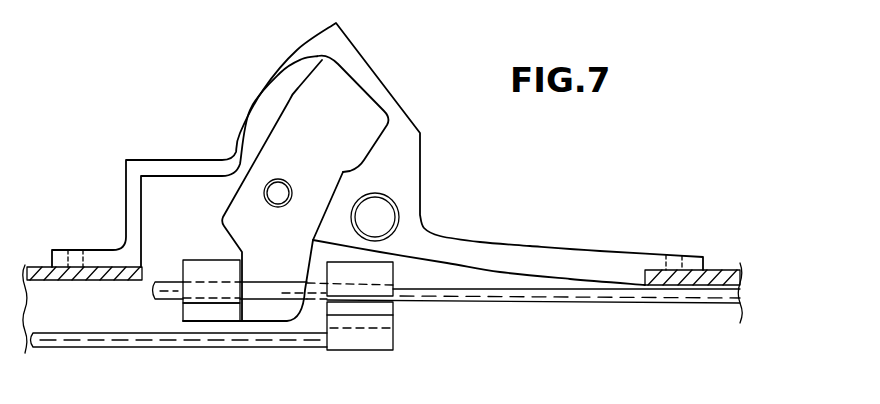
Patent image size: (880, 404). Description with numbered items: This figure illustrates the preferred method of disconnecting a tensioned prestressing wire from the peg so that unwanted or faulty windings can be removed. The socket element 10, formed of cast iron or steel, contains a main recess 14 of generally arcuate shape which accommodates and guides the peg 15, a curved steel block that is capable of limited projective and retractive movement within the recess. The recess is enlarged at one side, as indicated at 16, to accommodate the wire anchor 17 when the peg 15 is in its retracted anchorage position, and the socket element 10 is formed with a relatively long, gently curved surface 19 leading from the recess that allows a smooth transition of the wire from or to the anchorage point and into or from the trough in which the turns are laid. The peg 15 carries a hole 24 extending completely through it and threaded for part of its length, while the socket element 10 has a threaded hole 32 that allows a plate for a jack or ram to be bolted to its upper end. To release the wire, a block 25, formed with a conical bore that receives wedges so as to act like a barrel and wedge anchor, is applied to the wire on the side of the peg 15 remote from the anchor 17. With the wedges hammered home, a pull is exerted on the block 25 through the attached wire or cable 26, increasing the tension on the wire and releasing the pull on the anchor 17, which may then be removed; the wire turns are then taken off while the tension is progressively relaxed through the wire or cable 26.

The socket element 10 is at (372, 50).
The main recess 14 is at (313, 77).
The peg 15 is at (329, 137).
The enlargement or extension of the recess 16 is at (168, 180).
The wire anchor 17 is at (202, 321).
The curved surface 19 is at (492, 277).
The hole 24 is at (280, 179).
The block 25 is at (395, 307).
The wire or cable 26 is at (245, 350).
The threaded hole 32 is at (397, 208).